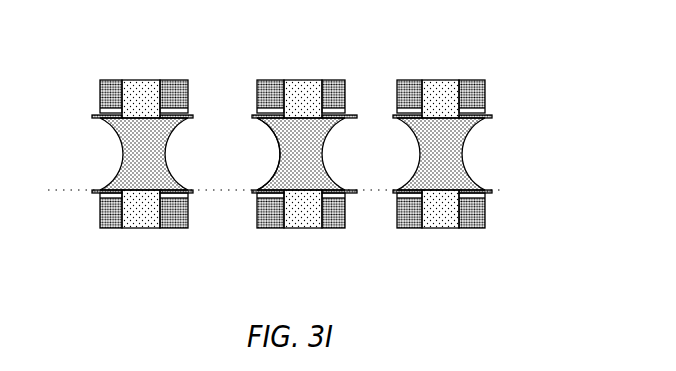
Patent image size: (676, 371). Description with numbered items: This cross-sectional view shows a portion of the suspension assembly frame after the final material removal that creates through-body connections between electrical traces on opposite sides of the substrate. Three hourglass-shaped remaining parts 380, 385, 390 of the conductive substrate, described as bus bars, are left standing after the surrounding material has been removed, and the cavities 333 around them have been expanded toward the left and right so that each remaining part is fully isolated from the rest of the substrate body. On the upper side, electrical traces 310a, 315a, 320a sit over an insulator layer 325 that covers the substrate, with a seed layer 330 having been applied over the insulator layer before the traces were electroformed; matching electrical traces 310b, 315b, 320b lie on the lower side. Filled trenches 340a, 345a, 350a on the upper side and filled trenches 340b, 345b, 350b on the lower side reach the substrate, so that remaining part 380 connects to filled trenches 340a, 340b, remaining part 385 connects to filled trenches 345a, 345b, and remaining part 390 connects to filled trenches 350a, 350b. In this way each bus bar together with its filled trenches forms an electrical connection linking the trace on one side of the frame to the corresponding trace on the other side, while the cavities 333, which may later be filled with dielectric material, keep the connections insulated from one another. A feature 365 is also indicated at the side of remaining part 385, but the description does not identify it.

The electrical trace 310a is at (108, 81).
The filled trench 340a is at (147, 90).
The remaining part of substrate (bus bar) 380 is at (155, 186).
The electrical trace 310b is at (110, 228).
The filled trench 340b is at (147, 230).
The electrical trace 315a is at (268, 81).
The filled trench 345a is at (310, 90).
The remaining part of substrate (bus bar) 385 is at (319, 186).
The pillar sidewall 365 is at (281, 152).
The electrical trace 315b is at (270, 228).
The filled trench 345b is at (310, 230).
The electrical trace 320a is at (410, 81).
The filled trench 350a is at (448, 90).
The insulator layer 325 is at (492, 117).
The remaining part of substrate (bus bar) 390 is at (457, 186).
The seed layer 330 is at (487, 207).
The electrical trace 320b is at (412, 228).
The filled trench 350b is at (452, 230).
The cavities 333 is at (240, 157).